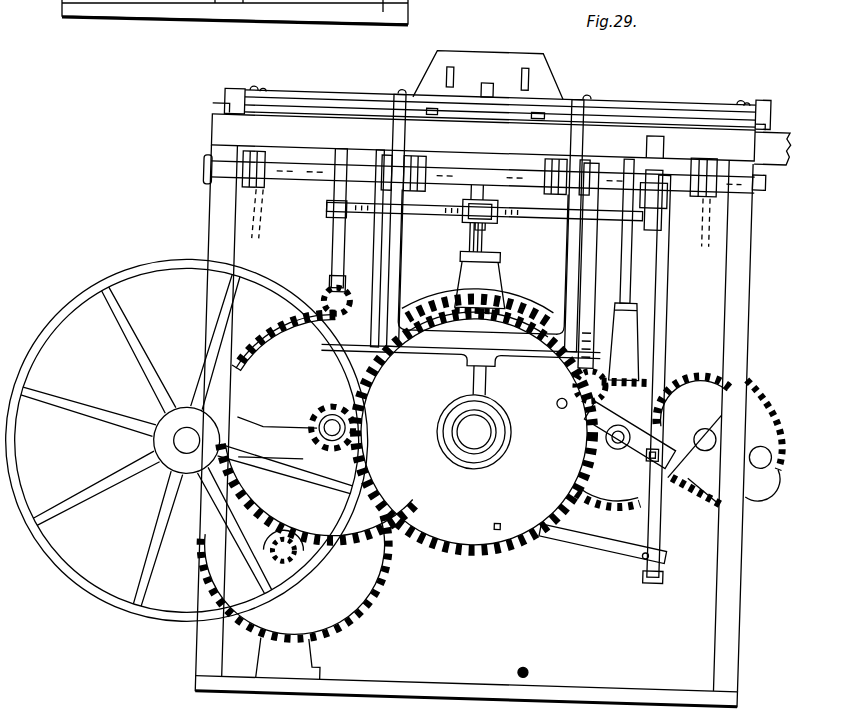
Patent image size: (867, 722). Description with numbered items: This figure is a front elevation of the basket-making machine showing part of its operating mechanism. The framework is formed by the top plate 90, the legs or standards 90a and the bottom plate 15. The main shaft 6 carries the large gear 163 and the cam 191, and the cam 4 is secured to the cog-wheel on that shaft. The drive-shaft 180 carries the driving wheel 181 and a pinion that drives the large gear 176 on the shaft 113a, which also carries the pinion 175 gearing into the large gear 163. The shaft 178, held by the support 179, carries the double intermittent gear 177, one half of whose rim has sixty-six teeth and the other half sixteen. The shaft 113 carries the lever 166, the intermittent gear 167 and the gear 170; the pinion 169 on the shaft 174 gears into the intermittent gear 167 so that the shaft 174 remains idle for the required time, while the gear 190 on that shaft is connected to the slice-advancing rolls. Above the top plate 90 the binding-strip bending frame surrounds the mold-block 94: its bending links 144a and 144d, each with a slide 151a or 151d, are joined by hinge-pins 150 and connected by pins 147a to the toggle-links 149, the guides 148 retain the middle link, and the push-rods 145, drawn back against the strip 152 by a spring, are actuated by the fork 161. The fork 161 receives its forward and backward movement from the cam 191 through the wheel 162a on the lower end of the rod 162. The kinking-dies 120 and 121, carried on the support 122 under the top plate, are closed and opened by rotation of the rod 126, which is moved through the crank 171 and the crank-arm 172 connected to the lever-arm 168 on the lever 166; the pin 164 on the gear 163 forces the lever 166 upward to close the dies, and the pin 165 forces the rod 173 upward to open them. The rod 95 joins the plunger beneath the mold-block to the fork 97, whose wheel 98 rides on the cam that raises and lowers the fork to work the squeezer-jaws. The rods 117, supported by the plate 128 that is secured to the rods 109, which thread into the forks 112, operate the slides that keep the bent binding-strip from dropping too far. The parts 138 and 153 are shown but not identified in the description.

The cam 4 is at (477, 312).
The main shaft 6 is at (473, 431).
The bottom plate 15 is at (498, 684).
The top plate 90 is at (501, 139).
The legs or standards 90a is at (474, 418).
The mold-block 94 is at (488, 75).
The rod 95 is at (480, 242).
The fork 97 is at (481, 281).
The wheel 98 is at (500, 302).
The rod 109 is at (627, 260).
The fork 112 is at (325, 297).
The shaft 113 is at (618, 420).
The shaft 113a is at (322, 445).
The rod 117 is at (482, 191).
The kinking-die 120 is at (704, 226).
The kinking-die 121 is at (699, 215).
The support 122 is at (695, 156).
The rod 126 is at (759, 178).
The plate 128 is at (323, 214).
The stud 138 is at (519, 84).
The bending link 144a is at (222, 96).
The bending link 144d is at (757, 97).
The push-rod 145 is at (580, 96).
The pin 147a is at (740, 95).
The guide 148 is at (533, 118).
The toggle-link 149 is at (640, 100).
The hinge-pin 150 is at (733, 96).
The slide 151a is at (207, 113).
The slide 151d is at (755, 117).
The strip 152 is at (700, 115).
The stud 153 is at (486, 88).
The fork 161 is at (463, 278).
The rod 162 is at (486, 390).
The wheel 162a is at (463, 400).
The large gear 163 is at (474, 432).
The pin 164 is at (557, 403).
The pin 165 is at (505, 522).
The lever 166 is at (588, 420).
The intermittent gear 167 is at (608, 439).
The lever-arm 168 is at (661, 452).
The pinion 169 is at (692, 426).
The gear 170 is at (670, 487).
The crank 171 is at (661, 190).
The crank-arm 172 is at (665, 279).
The rod 173 is at (606, 545).
The shaft 174 is at (717, 431).
The pinion 175 is at (333, 410).
The large gear 176 is at (320, 427).
The double intermittent gear 177 is at (294, 576).
The shaft 178 is at (289, 562).
The support 179 is at (288, 658).
The drive-shaft 180 is at (190, 437).
The driving wheel 181 is at (20, 461).
The gear 190 is at (757, 378).
The cam 191 is at (500, 452).